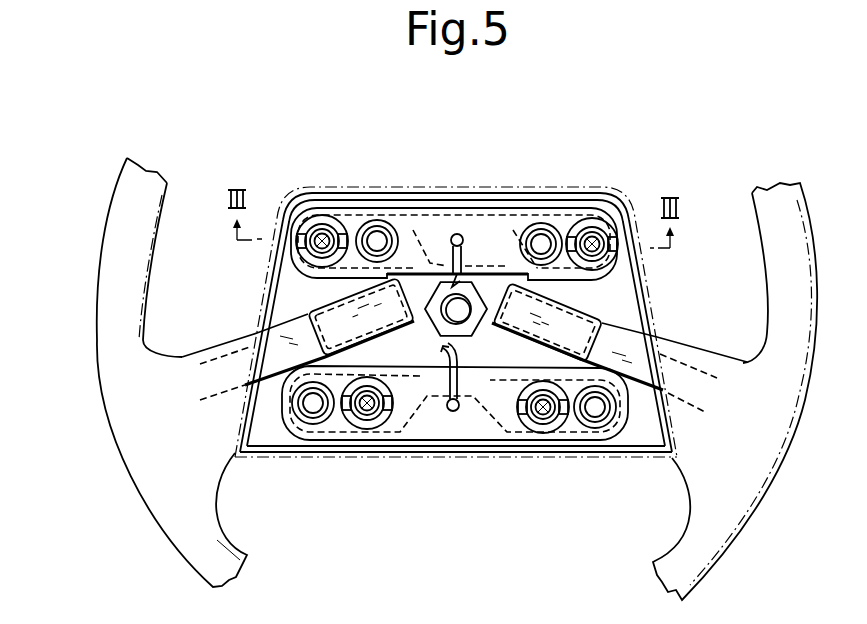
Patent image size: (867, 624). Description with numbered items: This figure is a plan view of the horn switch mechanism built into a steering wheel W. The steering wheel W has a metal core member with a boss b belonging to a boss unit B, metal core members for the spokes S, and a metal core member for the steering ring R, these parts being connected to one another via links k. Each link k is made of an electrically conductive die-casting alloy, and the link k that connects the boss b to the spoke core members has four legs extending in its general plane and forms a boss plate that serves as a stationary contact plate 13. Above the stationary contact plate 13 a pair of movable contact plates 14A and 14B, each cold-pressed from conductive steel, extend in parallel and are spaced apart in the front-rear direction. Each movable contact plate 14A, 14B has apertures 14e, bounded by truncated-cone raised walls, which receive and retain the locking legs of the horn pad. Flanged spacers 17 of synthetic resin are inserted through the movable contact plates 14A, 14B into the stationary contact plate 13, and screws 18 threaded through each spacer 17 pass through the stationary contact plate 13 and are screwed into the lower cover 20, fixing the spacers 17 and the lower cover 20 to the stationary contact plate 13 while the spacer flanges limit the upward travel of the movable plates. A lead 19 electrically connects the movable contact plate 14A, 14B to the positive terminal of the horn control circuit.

The steering wheel W is at (170, 140).
The steering ring R is at (157, 498).
The spokes S is at (177, 358).
The boss unit B is at (640, 204).
The lower cover 20 is at (643, 450).
The movable contact plate 14A is at (432, 227).
The movable contact plate 14B is at (407, 427).
The apertures 14e is at (375, 228).
The stationary contact plate 13 is at (430, 262).
The flanged spacer 17 is at (321, 231).
The screw 18 is at (310, 232).
The lead 19 is at (465, 252).
The link k is at (490, 290).
The boss b is at (470, 298).